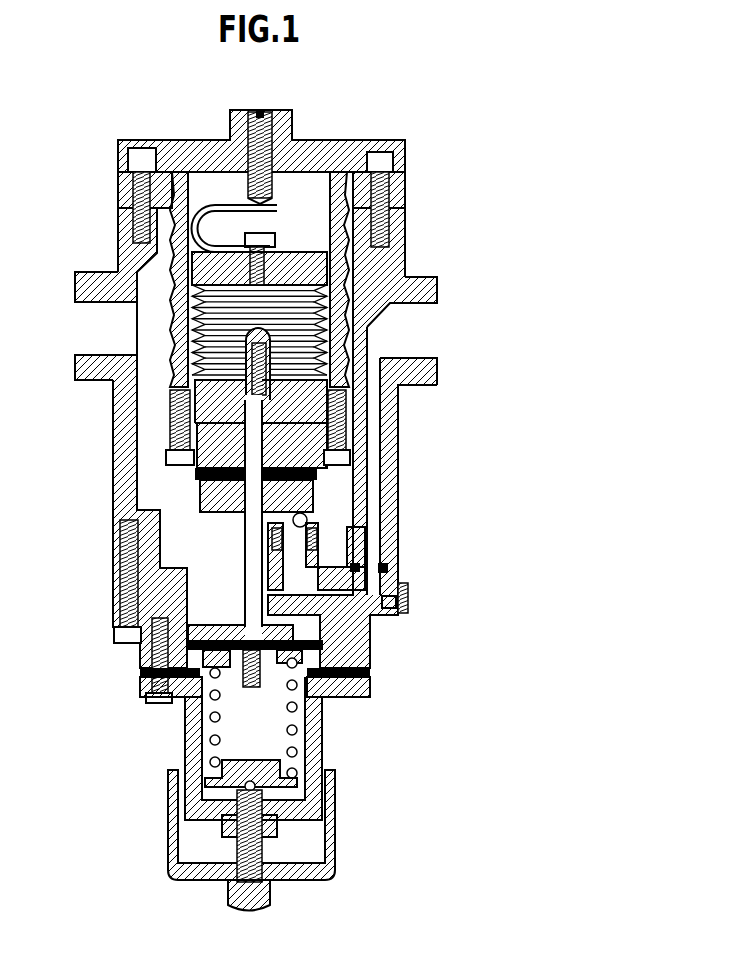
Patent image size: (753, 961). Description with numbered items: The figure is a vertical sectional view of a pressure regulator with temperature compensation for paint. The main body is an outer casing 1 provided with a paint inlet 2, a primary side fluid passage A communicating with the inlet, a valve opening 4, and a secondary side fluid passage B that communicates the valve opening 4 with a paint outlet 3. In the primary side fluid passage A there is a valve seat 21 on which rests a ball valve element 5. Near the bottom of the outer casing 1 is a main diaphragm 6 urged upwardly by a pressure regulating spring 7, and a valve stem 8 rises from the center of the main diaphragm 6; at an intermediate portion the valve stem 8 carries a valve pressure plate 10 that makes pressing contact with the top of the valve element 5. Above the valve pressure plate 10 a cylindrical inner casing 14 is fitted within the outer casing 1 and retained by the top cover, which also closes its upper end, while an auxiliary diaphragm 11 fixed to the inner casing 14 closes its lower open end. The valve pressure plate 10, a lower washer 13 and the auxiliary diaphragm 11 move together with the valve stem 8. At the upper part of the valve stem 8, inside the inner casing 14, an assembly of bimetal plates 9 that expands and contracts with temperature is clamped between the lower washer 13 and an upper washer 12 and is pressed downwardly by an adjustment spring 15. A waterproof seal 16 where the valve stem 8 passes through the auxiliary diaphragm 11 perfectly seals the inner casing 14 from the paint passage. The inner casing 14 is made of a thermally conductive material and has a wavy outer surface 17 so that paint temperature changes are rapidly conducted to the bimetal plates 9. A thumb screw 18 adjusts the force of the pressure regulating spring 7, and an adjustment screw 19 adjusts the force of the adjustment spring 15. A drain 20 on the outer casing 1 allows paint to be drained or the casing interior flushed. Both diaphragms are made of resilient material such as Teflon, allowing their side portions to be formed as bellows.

The outer casing 1 is at (408, 235).
The paint inlet 2 is at (414, 340).
The paint outlet 3 is at (92, 330).
The valve opening 4 is at (322, 532).
The ball valve element 5 is at (308, 517).
The main diaphragm 6 is at (325, 654).
The pressure regulating spring 7 is at (297, 729).
The valve stem 8 is at (168, 425).
The assembly of bimetal plates 9 is at (195, 292).
The valve pressure plate 10 is at (305, 493).
The auxiliary diaphragm 11 is at (203, 495).
The upper washer 12 is at (298, 260).
The lower washer 13 is at (195, 392).
The inner casing 14 is at (392, 186).
The adjustment spring 15 is at (140, 205).
The waterproof seal 16 is at (198, 474).
The wavy outer surface 17 is at (350, 278).
The thumb screw 18 is at (232, 892).
The adjustment screw 19 is at (268, 110).
The drain 20 is at (409, 598).
The valve seat 21 is at (352, 570).
The primary side fluid passage A is at (367, 447).
The secondary side fluid passage B is at (201, 552).